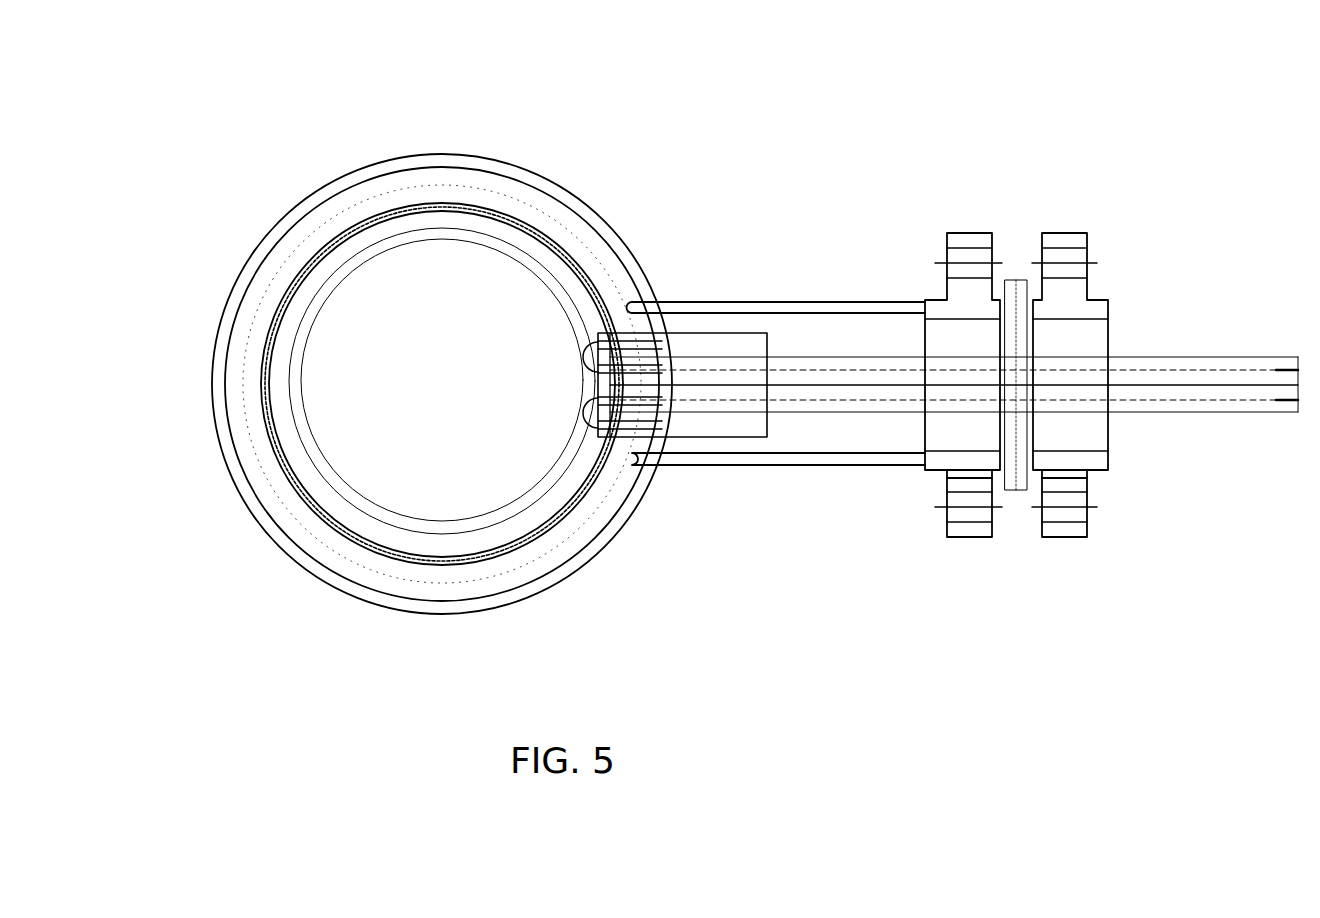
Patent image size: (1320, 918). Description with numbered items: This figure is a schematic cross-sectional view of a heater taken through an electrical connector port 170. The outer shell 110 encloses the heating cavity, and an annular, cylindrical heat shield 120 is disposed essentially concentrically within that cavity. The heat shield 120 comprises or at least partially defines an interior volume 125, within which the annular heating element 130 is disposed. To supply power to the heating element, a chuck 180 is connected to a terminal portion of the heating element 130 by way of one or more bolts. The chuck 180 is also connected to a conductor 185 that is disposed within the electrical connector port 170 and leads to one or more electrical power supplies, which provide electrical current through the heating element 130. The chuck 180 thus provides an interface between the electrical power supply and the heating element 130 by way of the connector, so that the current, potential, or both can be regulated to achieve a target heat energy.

The shell 110 is at (447, 153).
The heat shield 120 is at (323, 193).
The interior volume 125 is at (290, 262).
The heating element 130 is at (372, 552).
The electrical connector port 170 is at (930, 298).
The chuck 180 is at (747, 331).
The conductor 185 is at (847, 356).